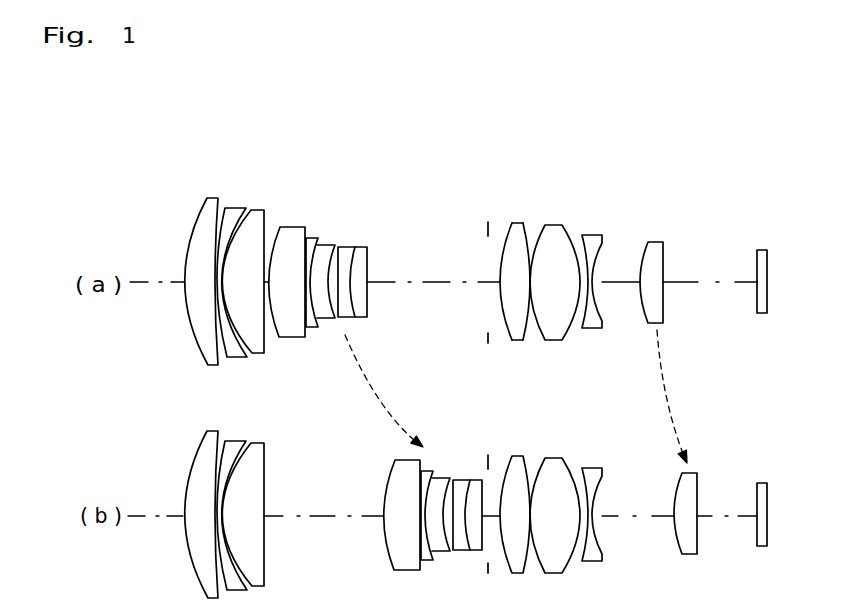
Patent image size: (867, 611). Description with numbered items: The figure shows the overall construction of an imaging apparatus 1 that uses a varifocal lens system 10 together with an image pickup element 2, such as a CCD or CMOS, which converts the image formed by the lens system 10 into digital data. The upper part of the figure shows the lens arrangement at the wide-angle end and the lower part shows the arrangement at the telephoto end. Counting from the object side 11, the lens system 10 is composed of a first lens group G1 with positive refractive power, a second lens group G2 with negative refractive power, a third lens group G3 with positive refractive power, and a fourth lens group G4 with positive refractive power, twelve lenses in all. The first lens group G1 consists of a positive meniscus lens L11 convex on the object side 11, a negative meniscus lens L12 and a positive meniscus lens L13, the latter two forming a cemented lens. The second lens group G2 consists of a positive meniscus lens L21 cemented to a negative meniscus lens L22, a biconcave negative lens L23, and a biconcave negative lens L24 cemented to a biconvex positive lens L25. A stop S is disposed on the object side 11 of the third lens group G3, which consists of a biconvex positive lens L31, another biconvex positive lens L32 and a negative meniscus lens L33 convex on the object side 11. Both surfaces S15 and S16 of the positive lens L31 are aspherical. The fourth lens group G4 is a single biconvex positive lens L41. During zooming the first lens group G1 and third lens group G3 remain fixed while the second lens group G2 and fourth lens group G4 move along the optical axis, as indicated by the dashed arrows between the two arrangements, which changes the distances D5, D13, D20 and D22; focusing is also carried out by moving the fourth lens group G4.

The imaging apparatus 1 is at (743, 146).
The image pickup element 2 is at (764, 251).
The lens system 10 is at (181, 162).
The object side 11 is at (143, 243).
The first lens group G1 is at (298, 117).
The second lens group G2 is at (503, 117).
The third lens group G3 is at (647, 117).
The fourth lens group G4 is at (713, 117).
The positive meniscus lens L11 is at (215, 207).
The negative meniscus lens L12 is at (237, 212).
The positive meniscus lens L13 is at (252, 217).
The positive meniscus lens L21 is at (290, 237).
The negative meniscus lens L22 is at (312, 244).
The negative lens L23 is at (327, 248).
The negative lens L24 is at (346, 250).
The positive lens L25 is at (361, 250).
The positive lens L31 is at (518, 228).
The positive lens L32 is at (553, 235).
The negative meniscus lens L33 is at (592, 243).
The positive lens L41 is at (655, 252).
The stop S is at (488, 226).
The aspherical surface S15 is at (500, 294).
The aspherical surface S16 is at (527, 330).
The distance D5 is at (282, 516).
The distance D13 is at (487, 508).
The distance D20 is at (613, 515).
The distance D22 is at (708, 515).